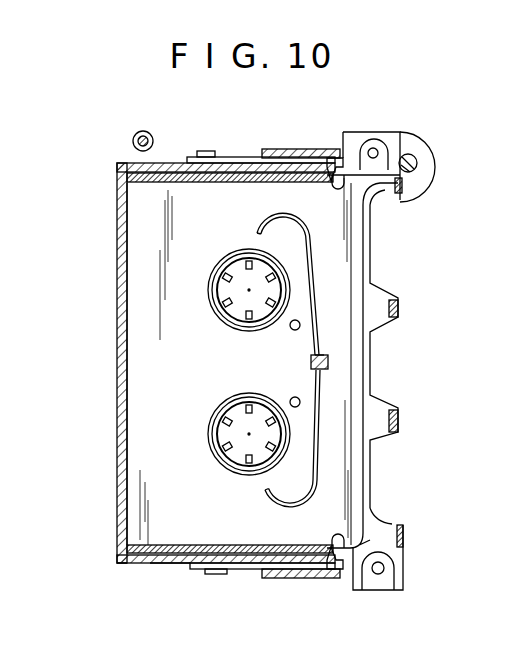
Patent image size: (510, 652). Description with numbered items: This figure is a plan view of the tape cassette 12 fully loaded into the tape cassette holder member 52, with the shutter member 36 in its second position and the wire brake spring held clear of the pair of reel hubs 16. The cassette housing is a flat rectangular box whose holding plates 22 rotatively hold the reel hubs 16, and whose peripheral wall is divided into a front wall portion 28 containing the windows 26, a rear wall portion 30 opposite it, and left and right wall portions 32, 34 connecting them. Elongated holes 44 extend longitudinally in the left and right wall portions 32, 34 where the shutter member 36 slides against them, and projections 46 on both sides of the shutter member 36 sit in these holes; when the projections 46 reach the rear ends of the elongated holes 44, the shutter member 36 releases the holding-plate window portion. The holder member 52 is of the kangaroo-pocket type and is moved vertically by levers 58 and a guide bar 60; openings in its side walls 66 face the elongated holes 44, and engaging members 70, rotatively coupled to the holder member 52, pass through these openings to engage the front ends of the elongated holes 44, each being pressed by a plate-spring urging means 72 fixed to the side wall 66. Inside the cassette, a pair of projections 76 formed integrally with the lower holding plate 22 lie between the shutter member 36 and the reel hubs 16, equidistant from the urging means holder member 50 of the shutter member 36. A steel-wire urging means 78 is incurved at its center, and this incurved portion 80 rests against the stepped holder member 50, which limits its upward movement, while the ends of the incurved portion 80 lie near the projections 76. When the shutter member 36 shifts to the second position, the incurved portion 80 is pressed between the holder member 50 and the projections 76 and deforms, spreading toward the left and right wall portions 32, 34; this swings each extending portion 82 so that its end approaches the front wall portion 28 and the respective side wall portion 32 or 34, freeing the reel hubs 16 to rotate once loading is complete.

The tape cassette 12 is at (108, 332).
The reel hubs 16 is at (216, 294).
The holding plates 22 is at (127, 258).
The windows 26 is at (383, 257).
The front wall portion 28 is at (404, 184).
The rear wall portion 30 is at (126, 388).
The left wall portion 32 is at (120, 562).
The right wall portion 34 is at (168, 177).
The shutter member 36 is at (367, 377).
The elongated holes 44 is at (367, 190).
The projections 46 is at (336, 180).
The urging means holder member 50 is at (311, 362).
The tape cassette holder member 52 is at (143, 565).
The levers 58 is at (236, 157).
The guide bar 60 is at (143, 131).
The side walls 66 is at (182, 563).
The engaging members 70 is at (348, 158).
The urging means 72 is at (302, 150).
The projections 76 is at (299, 326).
The urging means 78 is at (289, 383).
The incurved portion 80 is at (323, 352).
The extending portions 82 is at (318, 263).